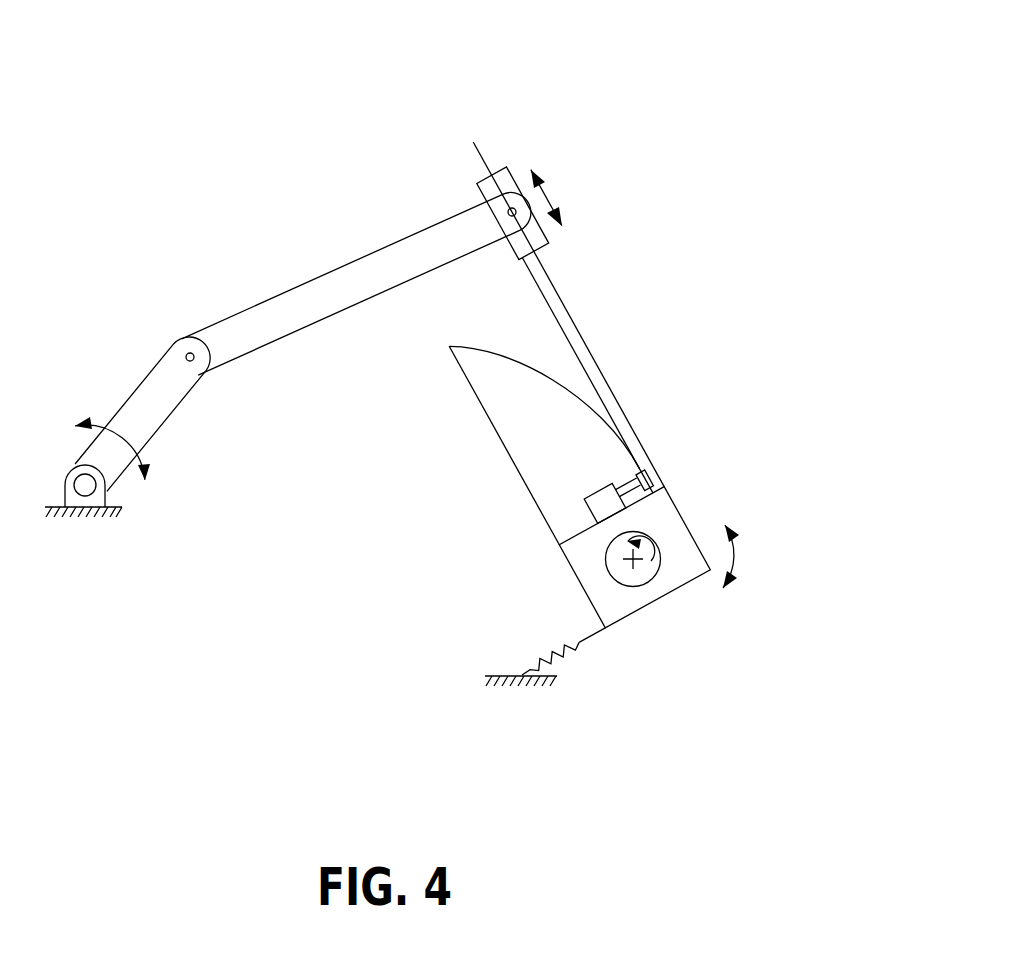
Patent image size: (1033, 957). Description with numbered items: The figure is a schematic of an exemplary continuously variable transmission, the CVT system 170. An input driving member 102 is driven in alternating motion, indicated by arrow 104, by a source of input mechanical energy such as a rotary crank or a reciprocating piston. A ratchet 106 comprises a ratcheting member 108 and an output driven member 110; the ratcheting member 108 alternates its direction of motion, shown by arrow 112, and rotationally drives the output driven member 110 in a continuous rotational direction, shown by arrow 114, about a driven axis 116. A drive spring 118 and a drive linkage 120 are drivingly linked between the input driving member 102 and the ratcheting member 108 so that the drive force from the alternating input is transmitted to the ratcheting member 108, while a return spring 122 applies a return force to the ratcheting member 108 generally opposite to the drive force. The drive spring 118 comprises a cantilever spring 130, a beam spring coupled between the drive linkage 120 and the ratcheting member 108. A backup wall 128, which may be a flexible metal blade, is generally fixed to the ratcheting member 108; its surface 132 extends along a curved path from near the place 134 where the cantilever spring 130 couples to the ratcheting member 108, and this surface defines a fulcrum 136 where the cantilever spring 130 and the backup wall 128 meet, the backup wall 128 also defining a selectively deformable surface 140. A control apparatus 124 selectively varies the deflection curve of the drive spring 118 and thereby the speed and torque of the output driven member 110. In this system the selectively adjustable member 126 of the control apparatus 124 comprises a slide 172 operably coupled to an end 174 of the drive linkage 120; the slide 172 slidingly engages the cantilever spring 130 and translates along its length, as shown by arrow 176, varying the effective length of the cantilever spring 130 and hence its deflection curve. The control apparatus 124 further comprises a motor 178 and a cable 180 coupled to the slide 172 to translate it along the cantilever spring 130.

The input driving member 102 is at (140, 383).
The arrow 104 is at (148, 470).
The ratchet 106 is at (668, 620).
The ratcheting member 108 is at (565, 562).
The output driven member 110 is at (633, 559).
The arrow 112 is at (740, 563).
The arrow 114 is at (704, 515).
The driven axis 116 is at (738, 478).
The drive spring 118 is at (628, 386).
The drive linkage 120 is at (343, 267).
The return spring 122 is at (579, 642).
The control apparatus 124 is at (550, 487).
The selectively adjustable member 126 is at (570, 237).
The backup wall 128 is at (476, 366).
The cantilever spring 130 is at (564, 305).
The surface 132 is at (524, 345).
The place of coupling 134 is at (680, 472).
The fulcrum 136 is at (664, 452).
The selectively deformable surface 140 is at (566, 367).
The CVT system 170 is at (575, 45).
The slide 172 is at (508, 168).
The end of the drive linkage 174 is at (458, 188).
The arrow 176 is at (548, 197).
The motor 178 is at (560, 513).
The cable 180 is at (562, 322).